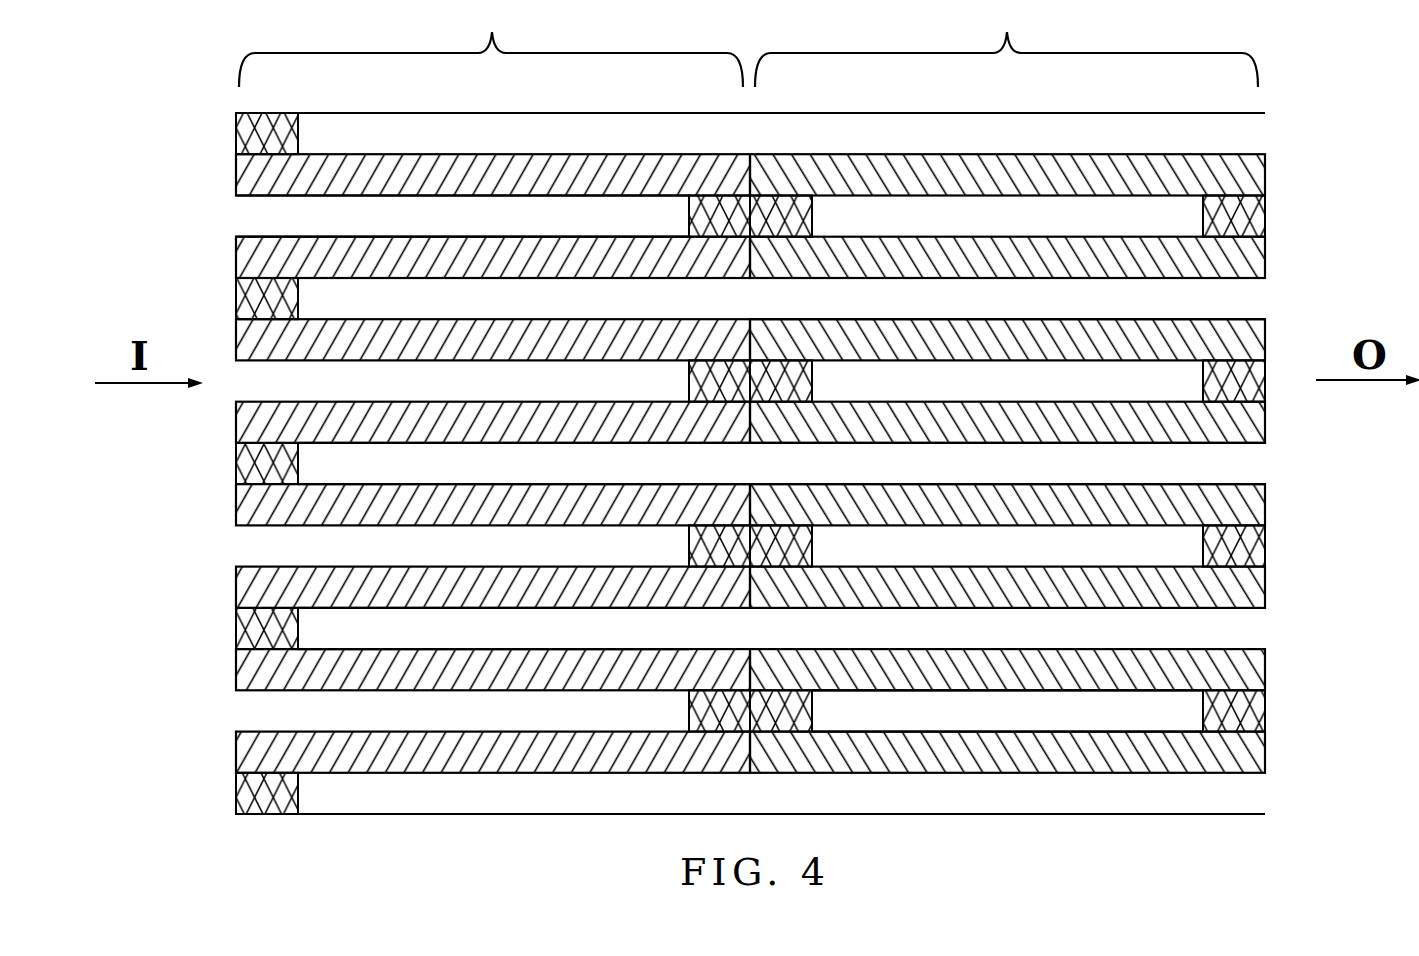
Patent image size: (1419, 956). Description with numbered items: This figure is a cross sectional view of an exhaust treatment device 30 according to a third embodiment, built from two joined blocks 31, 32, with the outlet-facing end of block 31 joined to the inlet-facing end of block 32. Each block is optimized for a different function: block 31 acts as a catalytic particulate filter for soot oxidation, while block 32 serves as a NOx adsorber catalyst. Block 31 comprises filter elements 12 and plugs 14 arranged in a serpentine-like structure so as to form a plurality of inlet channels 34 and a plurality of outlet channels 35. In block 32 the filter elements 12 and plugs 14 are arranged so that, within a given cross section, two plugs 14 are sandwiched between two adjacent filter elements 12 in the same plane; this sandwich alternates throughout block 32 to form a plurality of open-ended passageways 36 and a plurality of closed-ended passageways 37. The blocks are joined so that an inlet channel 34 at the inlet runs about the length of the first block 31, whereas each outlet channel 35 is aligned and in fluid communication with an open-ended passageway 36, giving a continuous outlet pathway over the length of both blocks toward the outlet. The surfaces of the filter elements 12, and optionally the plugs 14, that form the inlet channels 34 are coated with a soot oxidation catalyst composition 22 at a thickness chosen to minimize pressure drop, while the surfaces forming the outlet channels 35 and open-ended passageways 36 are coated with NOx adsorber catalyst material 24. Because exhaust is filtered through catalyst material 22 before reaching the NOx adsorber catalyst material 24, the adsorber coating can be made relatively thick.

The filter element 12 is at (237, 590).
The plug 14 is at (237, 636).
The soot oxidation catalyst composition 22 is at (278, 525).
The NOx adsorber catalyst material 24 is at (433, 441).
The exhaust treatment device 30 is at (185, 95).
The block 31 is at (491, 46).
The block 32 is at (1006, 46).
The inlet channel 34 is at (277, 210).
The outlet channel 35 is at (343, 627).
The open-ended passageway 36 is at (1225, 300).
The closed-ended passageway 37 is at (1165, 713).